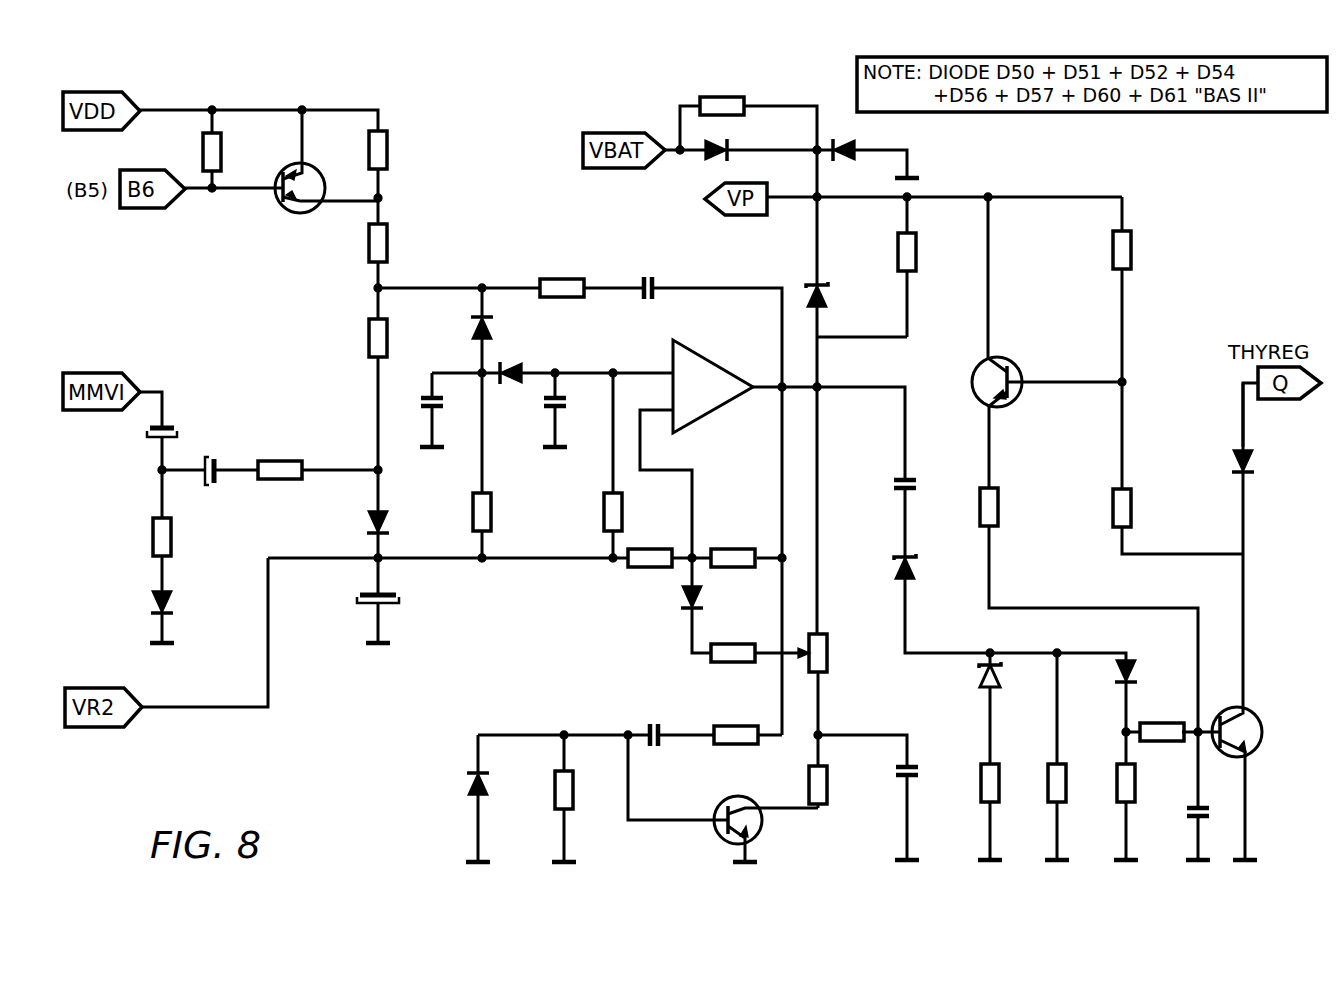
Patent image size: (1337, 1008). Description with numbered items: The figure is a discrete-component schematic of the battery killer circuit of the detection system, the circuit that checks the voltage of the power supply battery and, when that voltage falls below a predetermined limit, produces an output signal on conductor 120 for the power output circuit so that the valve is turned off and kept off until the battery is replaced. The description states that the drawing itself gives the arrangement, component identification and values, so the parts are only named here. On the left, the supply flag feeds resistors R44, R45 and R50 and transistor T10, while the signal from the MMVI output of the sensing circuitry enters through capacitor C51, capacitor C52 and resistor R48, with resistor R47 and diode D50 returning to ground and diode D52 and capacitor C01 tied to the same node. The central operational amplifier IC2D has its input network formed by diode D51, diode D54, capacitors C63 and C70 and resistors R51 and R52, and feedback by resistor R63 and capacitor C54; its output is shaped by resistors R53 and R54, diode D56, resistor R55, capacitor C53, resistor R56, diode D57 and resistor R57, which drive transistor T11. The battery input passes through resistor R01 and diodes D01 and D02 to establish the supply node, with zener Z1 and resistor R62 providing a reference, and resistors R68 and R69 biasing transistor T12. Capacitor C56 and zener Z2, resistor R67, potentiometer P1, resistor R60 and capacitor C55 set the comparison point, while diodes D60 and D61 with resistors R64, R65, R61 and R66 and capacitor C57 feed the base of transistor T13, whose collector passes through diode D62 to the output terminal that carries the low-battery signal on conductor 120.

The conductor 120 is at (1243, 386).
The resistor 10M R44 is at (402, 150).
The resistor R45 is at (324, 244).
The resistor 560K R50 is at (407, 242).
The transistor BC557 T10 is at (270, 201).
The capacitor 33MF C51 is at (132, 439).
The capacitor 22MF C52 is at (210, 494).
The resistor 33K R48 is at (279, 447).
The resistor 1K R47 is at (138, 534).
The diode D50 is at (137, 606).
The diode D52 is at (353, 524).
The capacitor 47MF C01 is at (342, 610).
The capacitor 82PF C63 is at (410, 401).
The capacitor 82PF C70 is at (578, 406).
The diode D51 is at (506, 330).
The diode D54 is at (515, 385).
The resistor 5M6 R51 is at (459, 509).
The resistor 5M6 R52 is at (589, 509).
The resistor 1M R63 is at (562, 265).
The capacitor 390NF C54 is at (659, 288).
The operational amplifier IC2D is at (706, 386).
The resistor 68K R53 is at (649, 581).
The resistor 1M R54 is at (733, 581).
The diode D56 is at (671, 617).
The resistor 10K R55 is at (733, 678).
The capacitor 100N C53 is at (659, 714).
The resistor 10K R56 is at (736, 759).
The diode D57 is at (458, 785).
The resistor 100K R57 is at (535, 791).
The transistor BC549 T11 is at (701, 820).
The resistor 100R R01 is at (723, 85).
The diode 1N4007 D01 is at (730, 152).
The diode 1N4007 D02 is at (862, 152).
The zener diode 4V7 Z1 is at (841, 300).
The resistor 270K R62 is at (936, 250).
The resistor 6K8 R68 is at (1145, 248).
The transistor BC557 T12 is at (967, 387).
The capacitor 0.47MF C56 is at (883, 493).
The zener diode 3V9 Z2 is at (883, 567).
The resistor 390R R67 is at (1020, 505).
The resistor 6K8 R69 is at (1145, 505).
The potentiometer 1K P1 is at (837, 651).
The resistor 1K8 R60 is at (842, 789).
The capacitor 100N C55 is at (930, 789).
The diode D60 is at (965, 675).
The diode D61 is at (1105, 673).
The resistor 4K7 R64 is at (1013, 788).
The resistor 4K7 R65 is at (1079, 788).
The resistor 4K7 R61 is at (1148, 788).
The resistor 1K R66 is at (1158, 712).
The capacitor 100N C57 is at (1175, 829).
The transistor BC337 T13 is at (1267, 737).
The diode 1N4007 D62 is at (1275, 471).